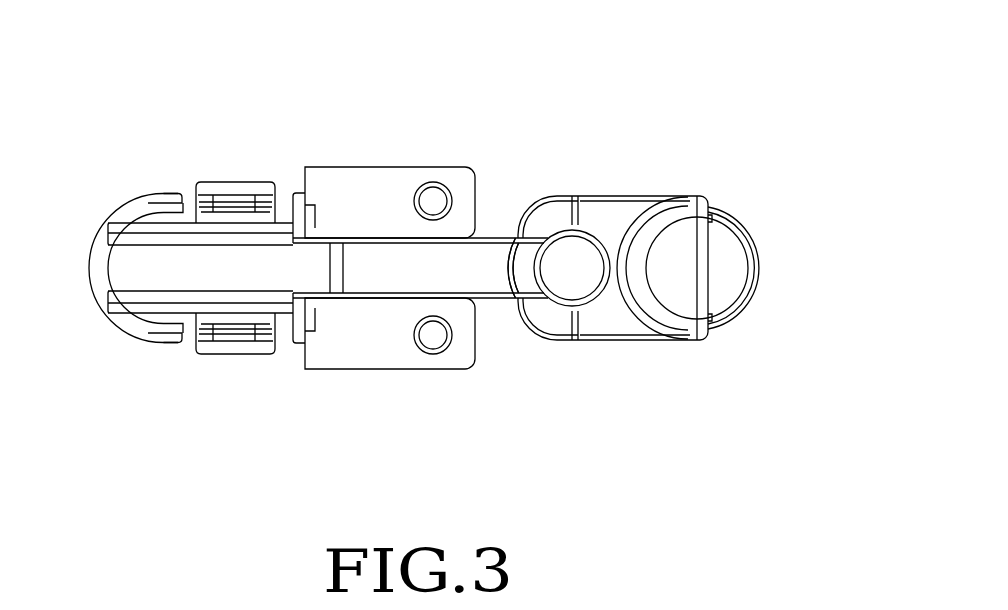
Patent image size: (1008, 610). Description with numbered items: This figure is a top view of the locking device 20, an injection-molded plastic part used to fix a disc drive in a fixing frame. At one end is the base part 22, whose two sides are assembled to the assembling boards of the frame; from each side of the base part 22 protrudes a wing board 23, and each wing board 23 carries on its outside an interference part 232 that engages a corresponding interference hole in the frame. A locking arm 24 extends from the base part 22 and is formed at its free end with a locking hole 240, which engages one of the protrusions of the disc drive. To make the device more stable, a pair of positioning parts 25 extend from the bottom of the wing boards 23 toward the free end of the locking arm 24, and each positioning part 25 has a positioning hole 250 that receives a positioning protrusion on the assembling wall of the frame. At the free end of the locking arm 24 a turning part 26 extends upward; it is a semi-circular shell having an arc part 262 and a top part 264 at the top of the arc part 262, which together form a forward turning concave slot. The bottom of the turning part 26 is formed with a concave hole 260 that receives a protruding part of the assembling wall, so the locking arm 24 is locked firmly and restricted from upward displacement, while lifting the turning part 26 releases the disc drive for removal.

The locking device 20 is at (830, 23).
The base part 22 is at (168, 270).
The wing board 23 is at (236, 195).
The interference part 232 is at (207, 195).
The locking arm 24 is at (473, 260).
The locking hole 240 is at (588, 248).
The positioning part 25 is at (367, 190).
The positioning hole 250 is at (433, 187).
The turning part 26 is at (702, 267).
The concave hole 260 is at (732, 257).
The arc part 262 is at (663, 316).
The top part 264 is at (680, 252).